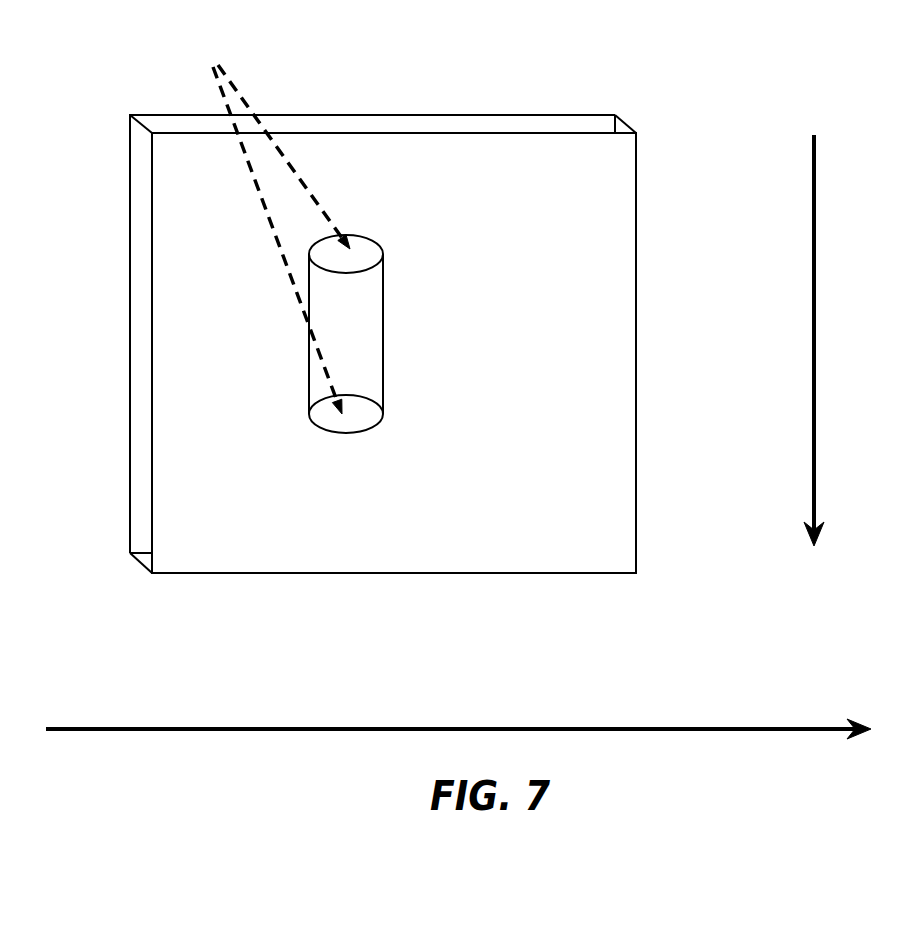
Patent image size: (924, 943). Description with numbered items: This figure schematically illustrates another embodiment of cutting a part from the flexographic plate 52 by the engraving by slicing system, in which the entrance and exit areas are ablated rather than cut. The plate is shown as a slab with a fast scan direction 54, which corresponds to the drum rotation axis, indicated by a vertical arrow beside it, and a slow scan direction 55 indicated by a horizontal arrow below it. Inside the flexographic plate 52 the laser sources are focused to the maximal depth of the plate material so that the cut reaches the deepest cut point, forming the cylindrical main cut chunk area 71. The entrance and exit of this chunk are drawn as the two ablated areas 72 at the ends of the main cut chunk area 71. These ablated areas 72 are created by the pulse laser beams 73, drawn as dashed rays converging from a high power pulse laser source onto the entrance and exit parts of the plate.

The flexographic plate 52 is at (527, 283).
The fast scan direction 54 is at (814, 267).
The slow scan direction 55 is at (146, 726).
The main cut chunk area 71 is at (541, 426).
The ablated area created by pulse laser for the plate entrance and exit parts 72 is at (350, 249).
The pulse laser beams 73 is at (273, 225).